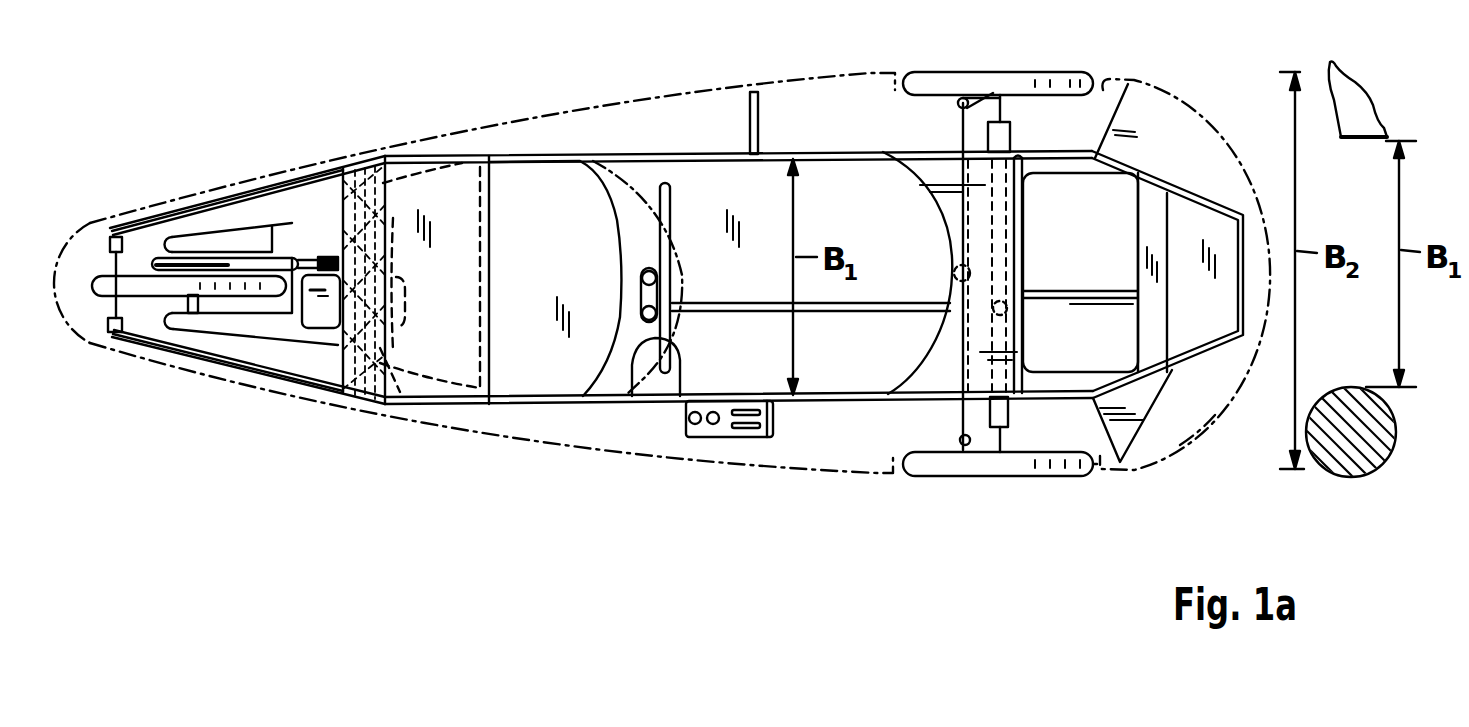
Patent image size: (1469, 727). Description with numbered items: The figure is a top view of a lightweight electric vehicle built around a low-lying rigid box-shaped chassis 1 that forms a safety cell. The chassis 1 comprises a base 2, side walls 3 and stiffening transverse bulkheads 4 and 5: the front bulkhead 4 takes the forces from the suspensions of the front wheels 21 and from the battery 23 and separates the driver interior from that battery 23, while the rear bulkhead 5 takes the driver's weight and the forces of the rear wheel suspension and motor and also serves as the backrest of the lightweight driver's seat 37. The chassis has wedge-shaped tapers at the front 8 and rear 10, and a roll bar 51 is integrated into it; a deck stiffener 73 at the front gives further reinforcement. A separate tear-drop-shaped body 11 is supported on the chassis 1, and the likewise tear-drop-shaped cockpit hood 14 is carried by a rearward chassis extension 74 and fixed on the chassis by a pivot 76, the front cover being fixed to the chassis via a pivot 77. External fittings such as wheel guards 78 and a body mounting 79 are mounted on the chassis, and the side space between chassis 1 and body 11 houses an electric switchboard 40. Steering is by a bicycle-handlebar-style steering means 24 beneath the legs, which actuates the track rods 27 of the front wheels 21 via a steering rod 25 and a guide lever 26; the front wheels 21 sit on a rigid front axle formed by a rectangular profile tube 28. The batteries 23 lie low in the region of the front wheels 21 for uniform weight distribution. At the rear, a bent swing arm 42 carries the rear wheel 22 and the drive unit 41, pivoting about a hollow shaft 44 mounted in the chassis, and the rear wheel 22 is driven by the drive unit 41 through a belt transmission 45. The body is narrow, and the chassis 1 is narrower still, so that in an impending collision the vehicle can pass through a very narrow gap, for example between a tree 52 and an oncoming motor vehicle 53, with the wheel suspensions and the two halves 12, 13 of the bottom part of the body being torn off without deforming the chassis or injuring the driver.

The chassis 1 is at (630, 146).
The base 2 is at (722, 190).
The side walls 3 is at (817, 150).
The front bulkhead 4 is at (1023, 205).
The rear bulkhead 5 is at (447, 210).
The front wedge-shaped taper 8 is at (1217, 193).
The rear wedge-shaped taper 10 is at (395, 150).
The body 11 is at (524, 104).
The bottom body half 12 is at (1215, 118).
The bottom body half 13 is at (1200, 430).
The cockpit hood 14 is at (688, 332).
The front wheels 21 is at (1057, 474).
The rear wheel 22 is at (145, 288).
The battery 23 is at (1125, 213).
The steering means 24 is at (625, 355).
The steering rod 25 is at (840, 312).
The guide lever 26 is at (980, 265).
The track rods 27 is at (947, 110).
The front axle tube 28 is at (970, 445).
The driver's seat 37 is at (575, 437).
The electric switchboard 40 is at (705, 437).
The drive unit 41 is at (317, 323).
The swing arm 42 is at (240, 327).
The hollow shaft 44 is at (398, 350).
The belt transmission 45 is at (270, 262).
The roll bar 51 is at (340, 230).
The tree 52 is at (1375, 454).
The oncoming motor vehicle 53 is at (1367, 102).
The deck stiffener 73 is at (917, 183).
The rearward chassis extension 74 is at (240, 197).
The pivot 76 is at (110, 238).
The pivot 77 is at (1022, 150).
The wheel guards 78 is at (1140, 397).
The body mounting 79 is at (755, 115).